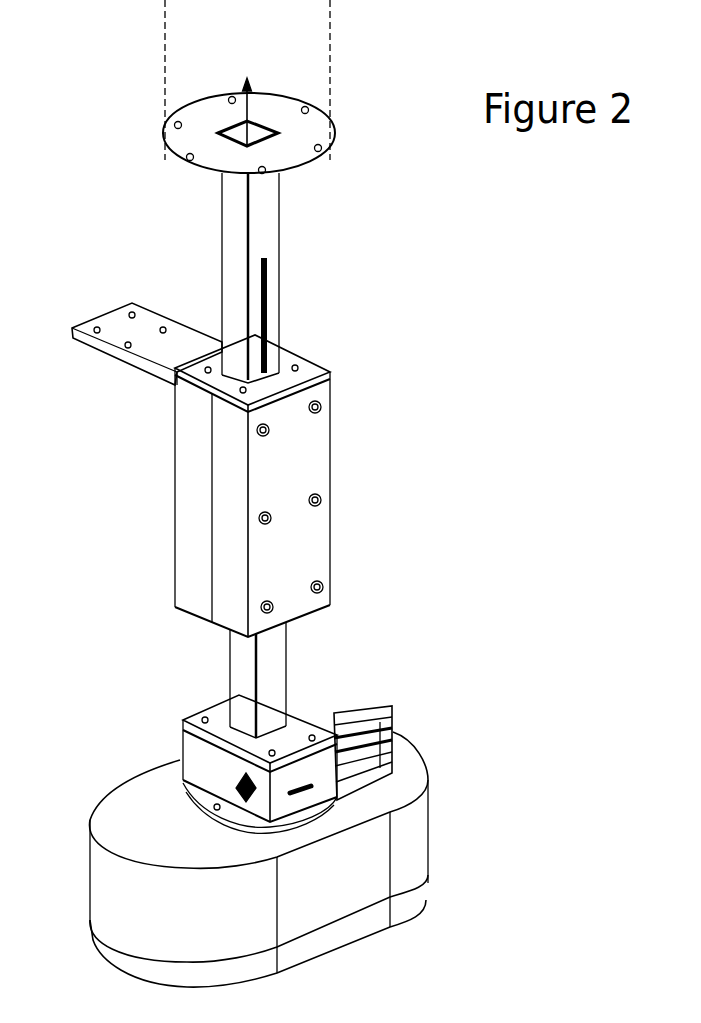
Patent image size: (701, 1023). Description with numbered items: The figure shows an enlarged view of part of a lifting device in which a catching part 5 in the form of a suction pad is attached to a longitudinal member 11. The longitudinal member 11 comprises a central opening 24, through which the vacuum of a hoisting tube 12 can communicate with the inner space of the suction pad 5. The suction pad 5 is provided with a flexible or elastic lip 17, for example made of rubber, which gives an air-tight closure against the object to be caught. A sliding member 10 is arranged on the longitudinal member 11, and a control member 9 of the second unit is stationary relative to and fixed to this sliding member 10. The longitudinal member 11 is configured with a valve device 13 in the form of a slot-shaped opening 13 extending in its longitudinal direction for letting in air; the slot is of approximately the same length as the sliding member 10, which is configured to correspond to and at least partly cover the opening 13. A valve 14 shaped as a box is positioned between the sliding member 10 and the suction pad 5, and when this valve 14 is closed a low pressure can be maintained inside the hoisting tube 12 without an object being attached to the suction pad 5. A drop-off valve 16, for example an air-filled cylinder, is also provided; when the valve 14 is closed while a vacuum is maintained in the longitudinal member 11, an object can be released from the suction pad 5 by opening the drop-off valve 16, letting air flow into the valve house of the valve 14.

The catching part 5 is at (406, 845).
The control member 9 is at (100, 348).
The sliding member 10 is at (326, 474).
The longitudinal member 11 is at (262, 223).
The hoisting tube 12 is at (247, 80).
The valve device 13 is at (284, 324).
The valve 14 is at (145, 744).
The drop-off valve 16 is at (396, 712).
The lip 17 is at (441, 902).
The central opening 24 is at (266, 119).